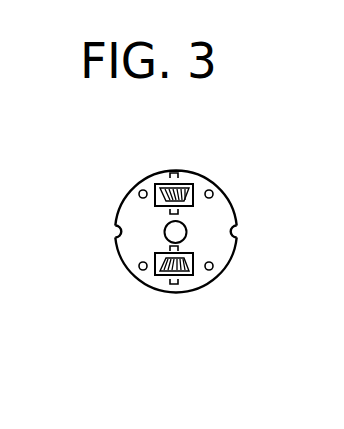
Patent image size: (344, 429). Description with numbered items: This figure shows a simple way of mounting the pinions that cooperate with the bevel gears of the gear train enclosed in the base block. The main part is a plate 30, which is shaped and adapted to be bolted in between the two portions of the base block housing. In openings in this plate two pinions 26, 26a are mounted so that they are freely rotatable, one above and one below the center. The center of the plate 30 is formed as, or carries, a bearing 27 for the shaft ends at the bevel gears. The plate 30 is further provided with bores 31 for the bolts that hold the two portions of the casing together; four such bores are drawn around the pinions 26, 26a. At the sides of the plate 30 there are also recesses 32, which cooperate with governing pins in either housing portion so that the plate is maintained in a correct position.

The pinion 26 is at (188, 188).
The pinion 26a is at (185, 273).
The bearing 27 is at (165, 228).
The plate 30 is at (145, 278).
The bores 31 is at (213, 262).
The recesses 32 is at (118, 234).